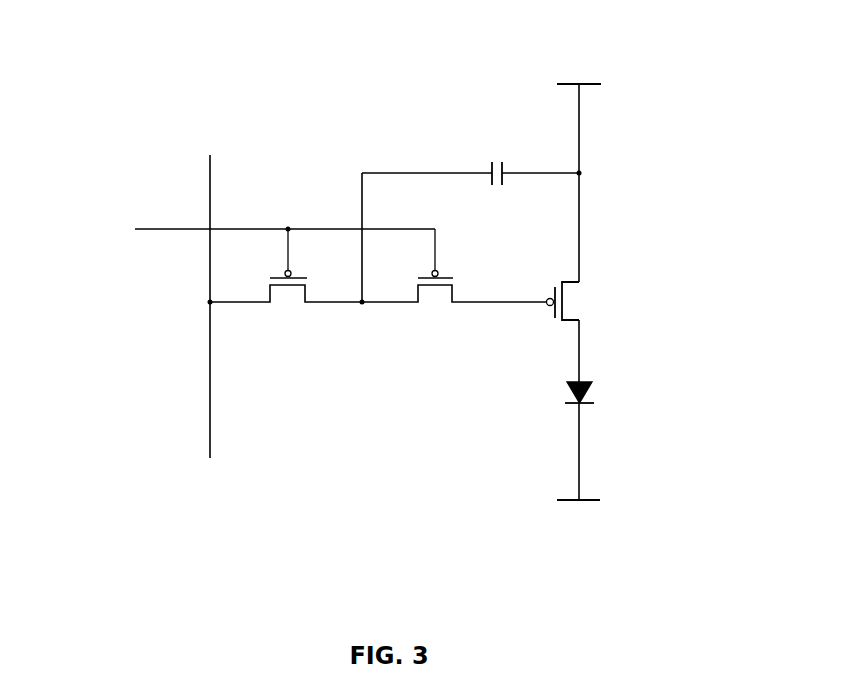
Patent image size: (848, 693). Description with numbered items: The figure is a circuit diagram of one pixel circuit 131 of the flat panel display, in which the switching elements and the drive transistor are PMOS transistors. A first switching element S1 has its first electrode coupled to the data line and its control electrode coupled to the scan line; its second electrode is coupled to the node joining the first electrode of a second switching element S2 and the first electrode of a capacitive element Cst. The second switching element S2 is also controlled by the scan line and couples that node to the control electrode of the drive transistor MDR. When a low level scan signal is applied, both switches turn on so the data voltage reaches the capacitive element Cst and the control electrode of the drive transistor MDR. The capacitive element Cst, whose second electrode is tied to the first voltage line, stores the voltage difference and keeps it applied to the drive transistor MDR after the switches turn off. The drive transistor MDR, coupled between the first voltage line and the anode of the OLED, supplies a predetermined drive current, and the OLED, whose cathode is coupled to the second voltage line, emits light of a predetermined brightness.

The pixel circuit 131 is at (387, 295).
The first switching element S1 is at (285, 282).
The second switching element S2 is at (454, 282).
The capacitive element Cst is at (472, 156).
The drive transistor MDR is at (583, 301).
The organic light emitting diode OLED is at (610, 394).